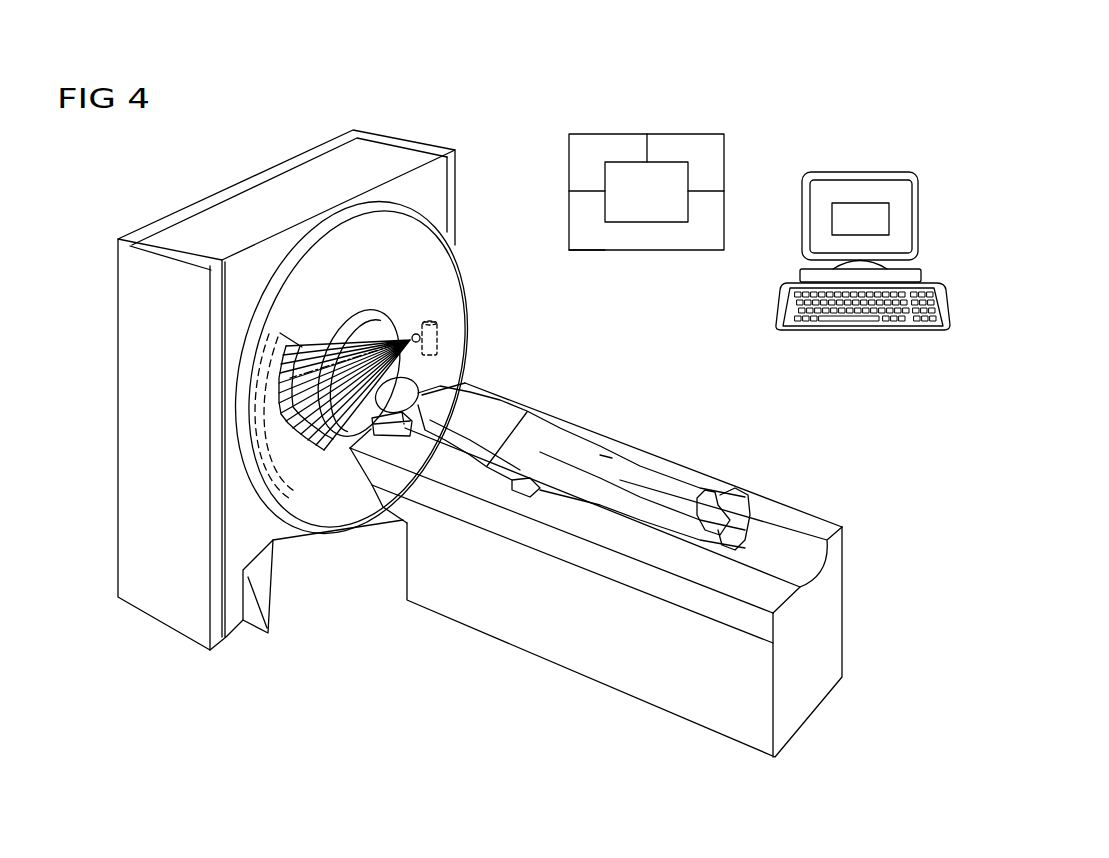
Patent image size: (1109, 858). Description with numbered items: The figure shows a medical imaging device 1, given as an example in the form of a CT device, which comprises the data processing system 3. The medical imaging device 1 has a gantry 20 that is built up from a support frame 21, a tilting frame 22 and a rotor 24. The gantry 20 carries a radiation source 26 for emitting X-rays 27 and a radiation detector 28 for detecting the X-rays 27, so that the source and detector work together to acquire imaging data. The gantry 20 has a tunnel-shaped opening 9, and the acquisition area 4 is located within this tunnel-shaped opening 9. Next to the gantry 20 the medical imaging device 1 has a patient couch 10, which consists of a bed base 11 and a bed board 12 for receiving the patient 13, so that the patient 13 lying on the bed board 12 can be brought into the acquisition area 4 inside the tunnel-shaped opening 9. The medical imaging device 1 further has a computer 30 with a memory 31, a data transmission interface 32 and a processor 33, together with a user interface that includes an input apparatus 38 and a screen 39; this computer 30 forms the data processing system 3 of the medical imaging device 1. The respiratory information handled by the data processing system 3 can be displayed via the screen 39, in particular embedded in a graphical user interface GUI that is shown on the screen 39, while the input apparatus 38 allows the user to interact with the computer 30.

The medical imaging device 1 is at (240, 172).
The gantry 20 is at (113, 477).
The support frame 21 is at (162, 610).
The tilting frame 22 is at (197, 222).
The rotor 24 is at (445, 262).
The radiation source 26 is at (440, 343).
The X-rays 27 is at (378, 322).
The radiation detector 28 is at (300, 487).
The acquisition area 4 is at (366, 366).
The tunnel-shaped opening 9 is at (387, 327).
The patient couch 10 is at (489, 652).
The bed base 11 is at (630, 668).
The bed board 12 is at (777, 505).
The patient 13 is at (489, 416).
The computer 30 is at (568, 206).
The memory 31 is at (580, 160).
The data transmission interface 32 is at (588, 238).
The processor 33 is at (713, 160).
The data processing system 3 is at (647, 205).
The input apparatus 38 is at (778, 297).
The screen 39 is at (802, 213).
The graphical user interface GUI is at (862, 212).